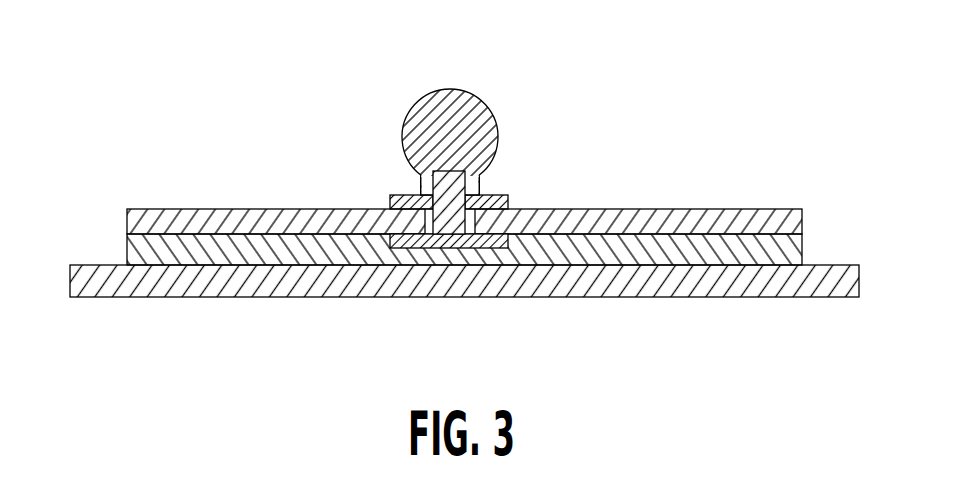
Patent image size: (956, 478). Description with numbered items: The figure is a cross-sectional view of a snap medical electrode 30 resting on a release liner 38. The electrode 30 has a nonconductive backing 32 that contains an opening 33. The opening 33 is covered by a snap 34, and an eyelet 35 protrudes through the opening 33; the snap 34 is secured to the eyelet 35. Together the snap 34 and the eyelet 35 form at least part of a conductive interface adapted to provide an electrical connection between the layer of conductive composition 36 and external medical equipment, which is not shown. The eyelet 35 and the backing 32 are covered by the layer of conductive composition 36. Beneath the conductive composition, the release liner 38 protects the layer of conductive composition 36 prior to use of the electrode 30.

The snap medical electrode 30 is at (436, 213).
The nonconductive backing 32 is at (643, 209).
The opening 33 is at (428, 192).
The snap 34 is at (468, 137).
The eyelet 35 is at (467, 175).
The layer of conductive composition 36 is at (127, 245).
The release liner 38 is at (70, 281).